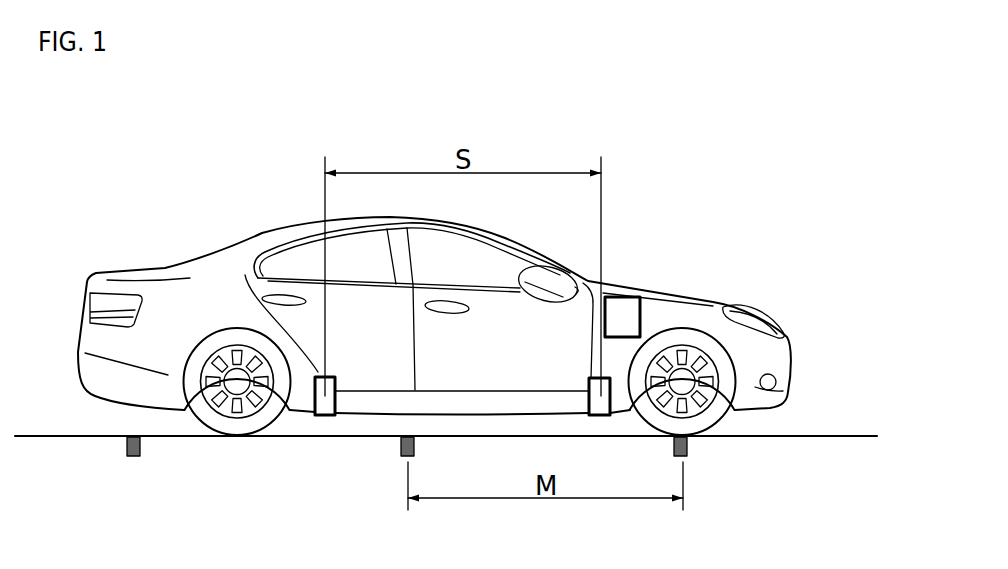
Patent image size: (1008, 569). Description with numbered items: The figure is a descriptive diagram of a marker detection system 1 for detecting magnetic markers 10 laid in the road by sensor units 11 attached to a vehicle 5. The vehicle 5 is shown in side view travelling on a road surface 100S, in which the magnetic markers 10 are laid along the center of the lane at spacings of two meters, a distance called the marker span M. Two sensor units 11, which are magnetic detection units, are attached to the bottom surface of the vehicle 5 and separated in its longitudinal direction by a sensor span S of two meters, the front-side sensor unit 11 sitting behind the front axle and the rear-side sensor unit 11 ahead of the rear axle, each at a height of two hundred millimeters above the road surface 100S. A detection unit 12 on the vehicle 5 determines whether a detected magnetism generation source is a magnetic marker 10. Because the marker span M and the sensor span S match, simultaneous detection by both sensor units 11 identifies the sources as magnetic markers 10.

The marker detection system 1 is at (140, 178).
The vehicle 5 is at (227, 262).
The magnetic marker 10 is at (125, 447).
The sensor unit 11 is at (323, 377).
The detection unit 12 is at (623, 310).
The road surface 100S is at (857, 435).